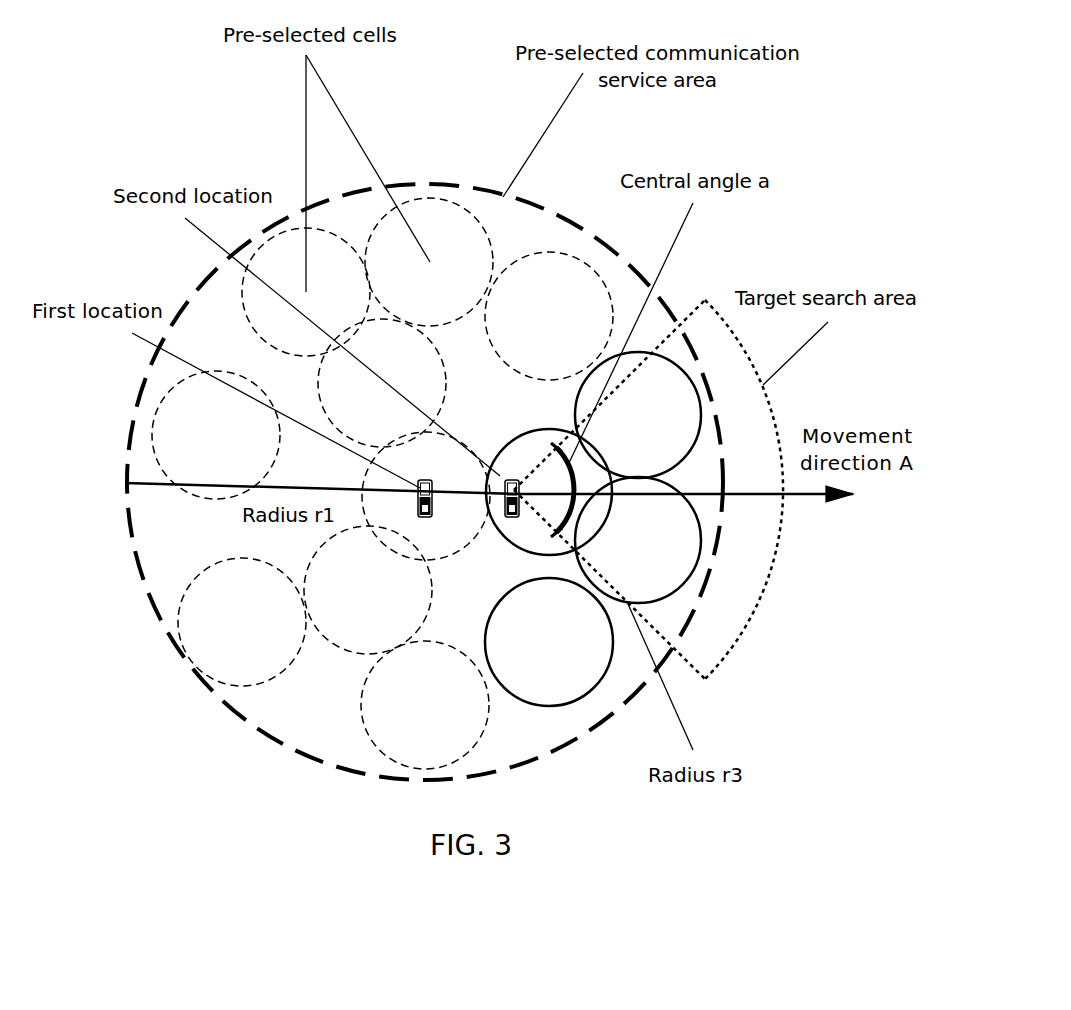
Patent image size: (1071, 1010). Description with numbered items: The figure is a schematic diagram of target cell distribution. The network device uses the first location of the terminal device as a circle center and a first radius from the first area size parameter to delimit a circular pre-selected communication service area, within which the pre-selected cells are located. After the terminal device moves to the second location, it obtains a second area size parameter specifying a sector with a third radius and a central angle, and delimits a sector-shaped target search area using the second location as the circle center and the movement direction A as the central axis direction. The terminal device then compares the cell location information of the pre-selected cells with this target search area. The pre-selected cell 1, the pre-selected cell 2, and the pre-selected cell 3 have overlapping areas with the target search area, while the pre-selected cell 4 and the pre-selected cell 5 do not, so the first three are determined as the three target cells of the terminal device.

The pre-selected cell 1 is at (638, 415).
The pre-selected cell 2 is at (638, 540).
The pre-selected cell 3 is at (549, 492).
The pre-selected cell 4 is at (549, 316).
The pre-selected cell 5 is at (549, 642).